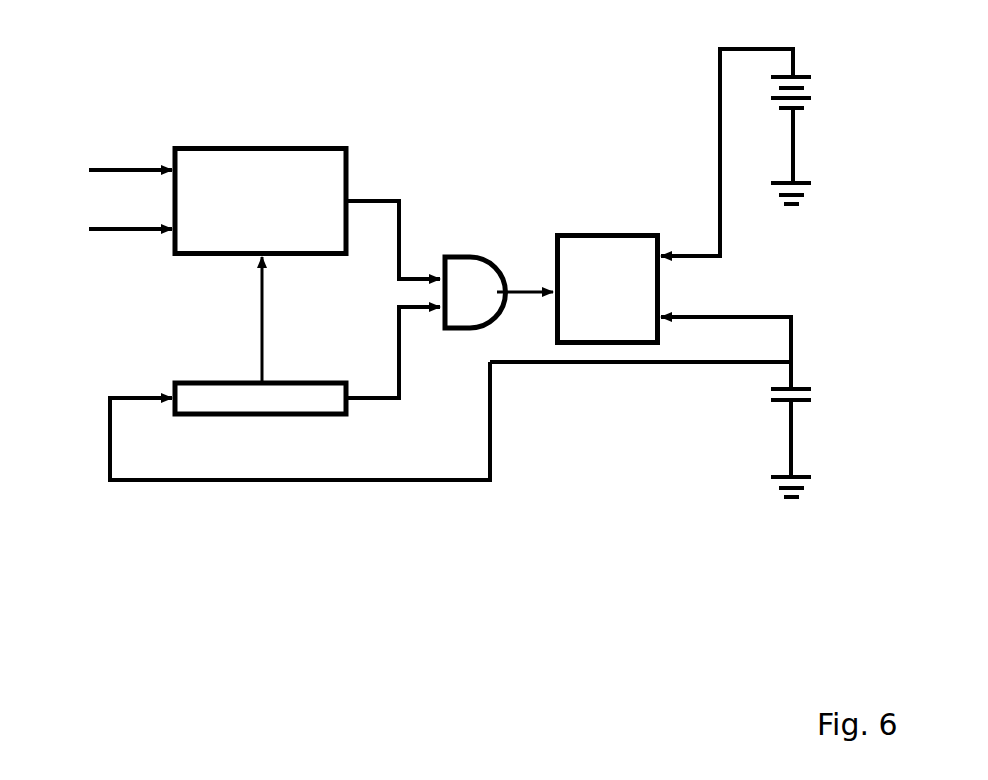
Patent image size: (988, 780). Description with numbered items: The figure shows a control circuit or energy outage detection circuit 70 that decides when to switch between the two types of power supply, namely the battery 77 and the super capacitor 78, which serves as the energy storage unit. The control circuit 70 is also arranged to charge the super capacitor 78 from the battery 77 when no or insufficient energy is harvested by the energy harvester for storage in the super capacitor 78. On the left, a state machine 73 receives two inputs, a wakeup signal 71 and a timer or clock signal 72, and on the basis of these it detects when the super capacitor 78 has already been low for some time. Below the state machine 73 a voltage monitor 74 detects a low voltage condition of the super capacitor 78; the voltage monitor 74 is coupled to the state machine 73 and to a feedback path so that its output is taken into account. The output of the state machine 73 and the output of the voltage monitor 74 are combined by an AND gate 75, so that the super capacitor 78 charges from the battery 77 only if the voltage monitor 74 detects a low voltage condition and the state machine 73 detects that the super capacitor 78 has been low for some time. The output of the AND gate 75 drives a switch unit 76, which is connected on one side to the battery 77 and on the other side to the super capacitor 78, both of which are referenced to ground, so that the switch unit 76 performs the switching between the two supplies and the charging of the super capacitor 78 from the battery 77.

The control circuit 70 is at (140, 106).
The wakeup signal 71 is at (118, 170).
The timer or clock signal 72 is at (117, 230).
The state machine 73 is at (292, 146).
The voltage monitor 74 is at (176, 381).
The AND gate 75 is at (465, 256).
The switch unit 76 is at (552, 243).
The battery 77 is at (793, 60).
The super capacitor 78 is at (793, 373).